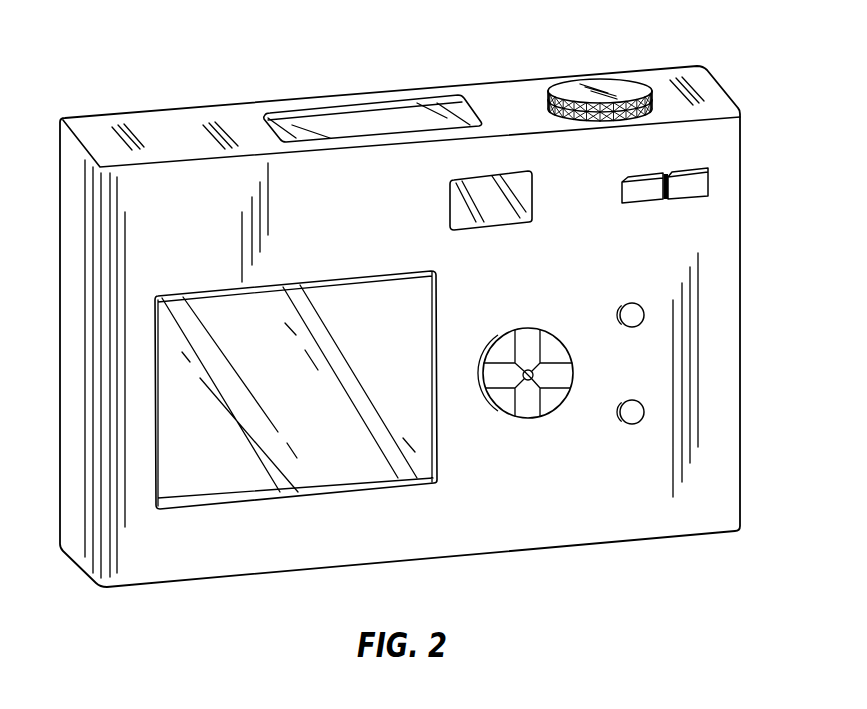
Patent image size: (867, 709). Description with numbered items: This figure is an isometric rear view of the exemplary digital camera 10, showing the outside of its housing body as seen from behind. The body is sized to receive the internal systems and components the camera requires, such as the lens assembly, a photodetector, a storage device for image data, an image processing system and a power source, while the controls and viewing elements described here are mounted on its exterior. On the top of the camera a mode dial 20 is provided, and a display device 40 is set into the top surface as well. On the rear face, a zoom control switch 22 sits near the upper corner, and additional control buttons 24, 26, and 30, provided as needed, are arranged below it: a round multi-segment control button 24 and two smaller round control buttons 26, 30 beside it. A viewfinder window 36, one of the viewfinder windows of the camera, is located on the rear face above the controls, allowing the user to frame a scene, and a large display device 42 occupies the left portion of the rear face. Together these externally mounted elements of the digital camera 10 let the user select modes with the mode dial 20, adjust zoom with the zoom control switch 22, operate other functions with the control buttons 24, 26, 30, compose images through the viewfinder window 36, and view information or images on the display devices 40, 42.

The digital camera 10 is at (182, 66).
The mode dial 20 is at (582, 76).
The zoom control switch 22 is at (701, 155).
The control button 24 is at (528, 420).
The control button 26 is at (630, 327).
The control button 30 is at (632, 424).
The viewfinder window 36 is at (500, 232).
The display device 40 is at (357, 107).
The display device 42 is at (355, 277).